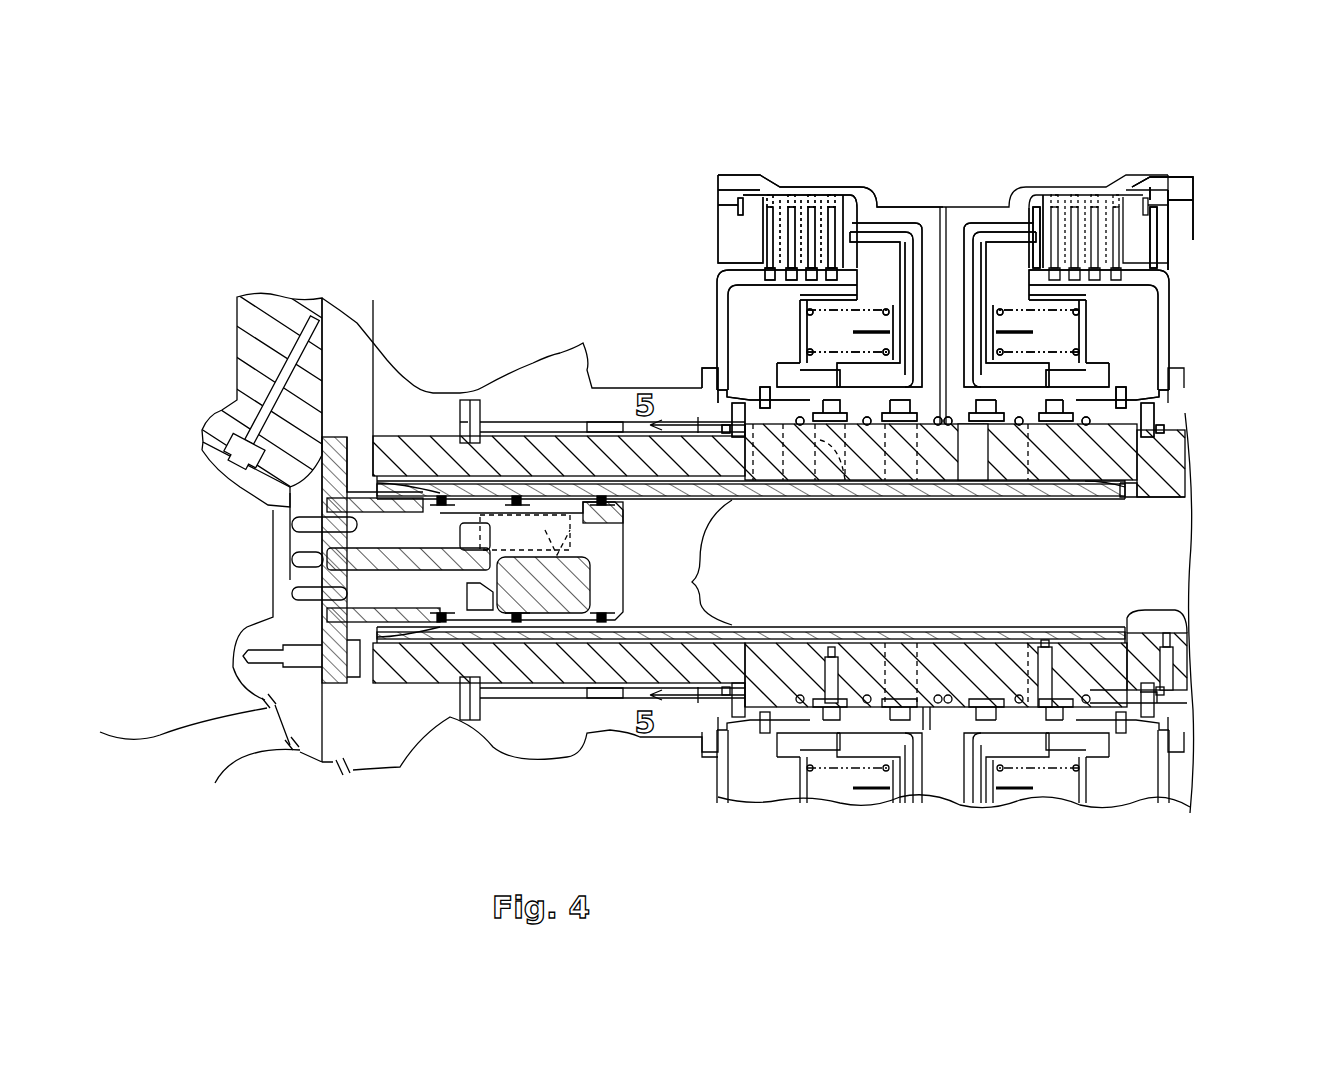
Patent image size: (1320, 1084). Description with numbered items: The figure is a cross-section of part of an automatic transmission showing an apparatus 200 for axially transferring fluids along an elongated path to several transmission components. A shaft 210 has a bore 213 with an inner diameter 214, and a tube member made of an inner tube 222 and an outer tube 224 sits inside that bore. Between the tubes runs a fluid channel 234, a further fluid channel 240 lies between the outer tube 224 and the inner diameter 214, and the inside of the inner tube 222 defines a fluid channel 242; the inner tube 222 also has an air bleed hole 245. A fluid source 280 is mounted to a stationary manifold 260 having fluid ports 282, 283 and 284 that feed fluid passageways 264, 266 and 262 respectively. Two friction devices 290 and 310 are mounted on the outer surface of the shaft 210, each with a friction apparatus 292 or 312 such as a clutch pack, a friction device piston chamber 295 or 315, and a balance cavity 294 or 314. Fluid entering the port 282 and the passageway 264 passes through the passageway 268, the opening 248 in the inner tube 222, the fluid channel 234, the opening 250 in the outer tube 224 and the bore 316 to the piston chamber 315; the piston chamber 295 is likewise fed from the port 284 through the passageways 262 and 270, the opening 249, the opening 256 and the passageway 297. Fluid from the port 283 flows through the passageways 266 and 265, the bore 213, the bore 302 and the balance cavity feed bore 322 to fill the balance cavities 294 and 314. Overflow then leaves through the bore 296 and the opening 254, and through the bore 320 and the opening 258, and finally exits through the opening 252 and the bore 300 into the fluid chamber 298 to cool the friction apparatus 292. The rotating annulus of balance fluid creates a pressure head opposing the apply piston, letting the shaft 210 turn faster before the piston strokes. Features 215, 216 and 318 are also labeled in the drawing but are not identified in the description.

The apparatus for axially transferring fluids 200 is at (267, 825).
The shaft 210 is at (1185, 452).
The bore 213 is at (1182, 575).
The inner diameter of the bore 214 is at (1107, 490).
The shaft step 215 is at (1128, 612).
The shaft nose 216 is at (1197, 497).
The inner tube 222 is at (684, 562).
The outer tube 224 is at (553, 473).
The fluid channel 234 is at (448, 485).
The fluid channel 240 is at (573, 640).
The fluid channel 242 is at (955, 612).
The air bleed hole 245 is at (408, 576).
The opening 248 is at (478, 496).
The opening 249 is at (550, 500).
The opening 250 is at (973, 485).
The opening 252 is at (773, 500).
The opening 254 is at (817, 500).
The opening 256 is at (893, 500).
The opening 258 is at (1053, 503).
The manifold 260 is at (343, 447).
The fluid passageway 262 is at (307, 527).
The fluid passageway 264 is at (307, 590).
The fluid passageway 265 is at (600, 523).
The fluid passageway 266 is at (300, 563).
The fluid passageway 268 is at (490, 500).
The fluid passageway 270 is at (597, 428).
The fluid source 280 is at (200, 437).
The fluid port 282 is at (267, 708).
The fluid port 283 is at (244, 783).
The fluid port 284 is at (340, 773).
The friction device 290 is at (840, 170).
The friction apparatus 292 is at (738, 245).
The balance cavity 294 is at (887, 250).
The friction device piston chamber 295 is at (913, 310).
The bore 296 is at (837, 500).
The passageway 297 is at (930, 490).
The fluid chamber 298 is at (785, 345).
The bore 300 is at (767, 407).
The bore 302 is at (905, 710).
The friction device 310 is at (1103, 178).
The friction apparatus 312 is at (1178, 245).
The balance cavity 314 is at (987, 260).
The friction device piston chamber 315 is at (945, 330).
The bore 316 is at (1060, 425).
The clutch cylinder 318 is at (1145, 345).
The bore 320 is at (1027, 453).
The balance cavity feed bore 322 is at (1083, 653).